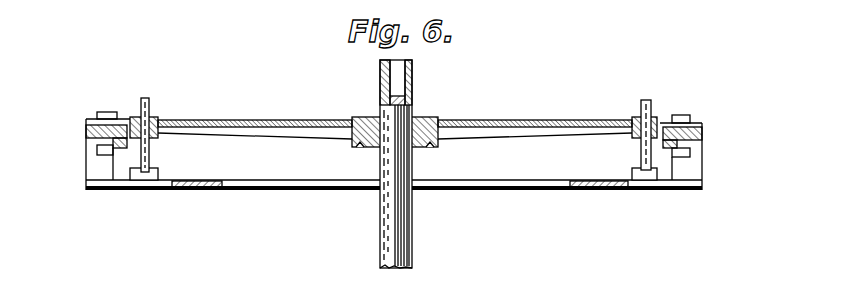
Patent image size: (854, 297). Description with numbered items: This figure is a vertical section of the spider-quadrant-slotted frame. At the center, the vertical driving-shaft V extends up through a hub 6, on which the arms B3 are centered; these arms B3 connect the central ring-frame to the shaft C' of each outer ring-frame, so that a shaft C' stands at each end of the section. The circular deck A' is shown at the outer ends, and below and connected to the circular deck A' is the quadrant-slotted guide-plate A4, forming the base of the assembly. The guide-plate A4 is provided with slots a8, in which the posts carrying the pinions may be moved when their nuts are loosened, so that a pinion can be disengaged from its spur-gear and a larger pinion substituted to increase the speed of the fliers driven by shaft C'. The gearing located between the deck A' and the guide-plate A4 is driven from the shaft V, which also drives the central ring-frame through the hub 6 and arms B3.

The quadrant-slotted guide-plate A4 is at (503, 188).
The circular deck A' is at (388, 144).
The arms B3 is at (573, 112).
The shaft C' is at (395, 124).
The hub 6 is at (360, 117).
The vertical driving-shaft V is at (412, 80).
The slot a8 is at (592, 188).